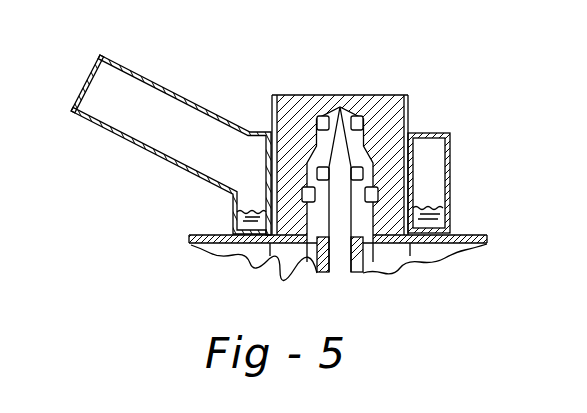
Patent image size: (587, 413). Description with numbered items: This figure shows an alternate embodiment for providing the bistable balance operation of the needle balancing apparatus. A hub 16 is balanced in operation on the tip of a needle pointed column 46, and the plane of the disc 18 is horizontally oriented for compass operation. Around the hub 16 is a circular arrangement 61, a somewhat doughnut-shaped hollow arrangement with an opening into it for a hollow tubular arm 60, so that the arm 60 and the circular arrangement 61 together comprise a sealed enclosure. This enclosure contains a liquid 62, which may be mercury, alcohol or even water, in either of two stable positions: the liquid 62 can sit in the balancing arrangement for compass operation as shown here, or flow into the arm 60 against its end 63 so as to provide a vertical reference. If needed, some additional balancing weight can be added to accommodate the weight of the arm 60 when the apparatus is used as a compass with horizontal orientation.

The hub 16 is at (301, 106).
The disc 18 is at (213, 246).
The needle pointed column 46 is at (338, 262).
The tubular arm 60 is at (163, 88).
The circular arrangement 61 is at (425, 147).
The liquid 62 is at (245, 221).
The end of arm 63 is at (93, 68).